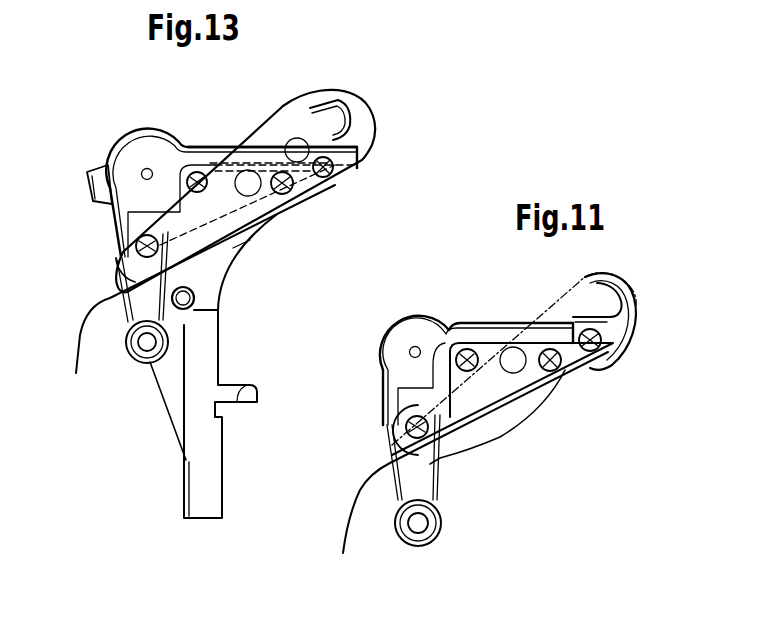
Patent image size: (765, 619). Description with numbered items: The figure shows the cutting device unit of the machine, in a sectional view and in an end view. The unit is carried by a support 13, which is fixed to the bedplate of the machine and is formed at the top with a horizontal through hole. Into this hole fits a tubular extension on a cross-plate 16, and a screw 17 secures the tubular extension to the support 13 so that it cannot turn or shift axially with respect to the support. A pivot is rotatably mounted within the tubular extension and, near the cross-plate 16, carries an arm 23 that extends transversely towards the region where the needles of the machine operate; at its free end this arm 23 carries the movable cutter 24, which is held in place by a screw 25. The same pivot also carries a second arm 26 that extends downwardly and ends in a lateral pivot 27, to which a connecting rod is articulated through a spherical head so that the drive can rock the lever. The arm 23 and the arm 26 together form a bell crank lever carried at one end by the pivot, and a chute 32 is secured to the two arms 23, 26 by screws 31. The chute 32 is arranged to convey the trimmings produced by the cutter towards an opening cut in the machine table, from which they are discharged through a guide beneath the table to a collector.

In FIG. 13, the support 13 is at (217, 330).
In FIG. 13, the cross-plate 16 is at (293, 120).
In FIG. 13, the screw 17 is at (90, 189).
In FIG. 13, the arm 23 is at (204, 165).
In FIG. 11, the arm 23 is at (480, 338).
In FIG. 13, the movable cutter 24 is at (355, 102).
In FIG. 11, the movable cutter 24 is at (623, 284).
In FIG. 13, the screw 25 is at (325, 178).
In FIG. 11, the screw 25 is at (610, 352).
In FIG. 13, the arm 26 is at (96, 300).
In FIG. 11, the arm 26 is at (425, 470).
In FIG. 13, the lateral pivot 27 is at (132, 358).
In FIG. 11, the lateral pivot 27 is at (422, 527).
In FIG. 13, the screws 31 is at (195, 193).
In FIG. 11, the screws 31 is at (475, 367).
In FIG. 13, the chute 32 is at (283, 205).
In FIG. 11, the chute 32 is at (570, 373).